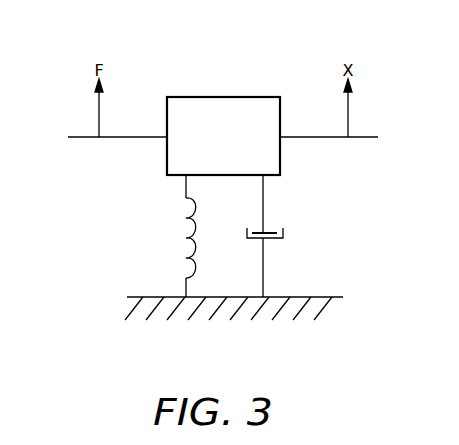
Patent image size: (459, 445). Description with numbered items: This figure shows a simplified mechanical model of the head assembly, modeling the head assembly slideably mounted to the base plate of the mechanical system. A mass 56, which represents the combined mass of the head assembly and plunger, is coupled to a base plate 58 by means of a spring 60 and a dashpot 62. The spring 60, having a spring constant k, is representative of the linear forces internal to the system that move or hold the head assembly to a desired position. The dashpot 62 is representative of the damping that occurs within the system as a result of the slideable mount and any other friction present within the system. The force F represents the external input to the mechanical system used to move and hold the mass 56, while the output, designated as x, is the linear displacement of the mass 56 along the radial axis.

The mass 56 is at (251, 102).
The base plate 58 is at (292, 297).
The spring 60 is at (192, 248).
The dashpot 62 is at (285, 238).